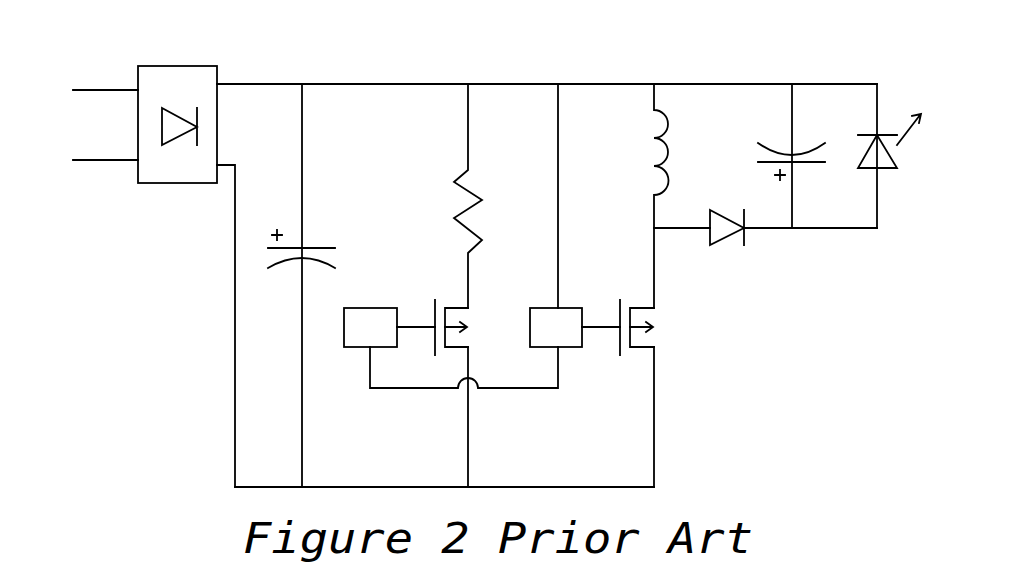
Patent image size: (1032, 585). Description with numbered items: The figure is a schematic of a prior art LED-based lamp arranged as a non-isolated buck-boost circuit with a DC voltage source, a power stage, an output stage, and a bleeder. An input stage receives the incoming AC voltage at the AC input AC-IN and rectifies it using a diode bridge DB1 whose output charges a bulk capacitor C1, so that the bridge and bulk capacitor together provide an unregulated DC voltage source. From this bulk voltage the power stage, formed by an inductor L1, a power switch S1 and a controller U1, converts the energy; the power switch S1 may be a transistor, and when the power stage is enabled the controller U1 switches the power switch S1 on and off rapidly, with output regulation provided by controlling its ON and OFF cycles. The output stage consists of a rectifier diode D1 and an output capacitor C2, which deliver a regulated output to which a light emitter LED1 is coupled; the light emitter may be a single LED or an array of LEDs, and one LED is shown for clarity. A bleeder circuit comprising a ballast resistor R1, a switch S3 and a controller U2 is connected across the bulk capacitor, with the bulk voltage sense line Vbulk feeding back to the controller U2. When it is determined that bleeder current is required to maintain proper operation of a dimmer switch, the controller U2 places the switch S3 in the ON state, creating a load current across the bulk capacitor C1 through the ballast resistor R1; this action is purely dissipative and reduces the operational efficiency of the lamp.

The diode bridge DB1 is at (186, 264).
The AC input AC-IN is at (100, 125).
The bulk capacitor C1 is at (302, 285).
The ballast resistor R1 is at (482, 196).
The V bulk sense Vbulk is at (525, 196).
The controller U2 is at (451, 348).
The switch S3 is at (468, 393).
The controller U1 is at (575, 327).
The power switch S1 is at (652, 393).
The inductor L1 is at (675, 196).
The rectifier diode D1 is at (765, 241).
The output capacitor C2 is at (794, 156).
The light emitter LED1 is at (891, 156).